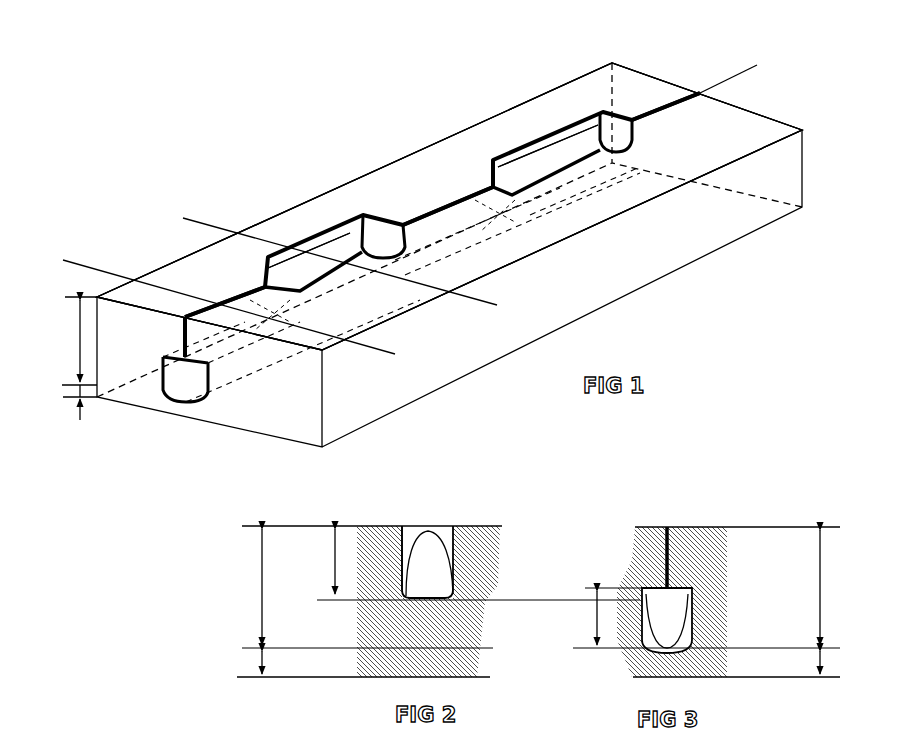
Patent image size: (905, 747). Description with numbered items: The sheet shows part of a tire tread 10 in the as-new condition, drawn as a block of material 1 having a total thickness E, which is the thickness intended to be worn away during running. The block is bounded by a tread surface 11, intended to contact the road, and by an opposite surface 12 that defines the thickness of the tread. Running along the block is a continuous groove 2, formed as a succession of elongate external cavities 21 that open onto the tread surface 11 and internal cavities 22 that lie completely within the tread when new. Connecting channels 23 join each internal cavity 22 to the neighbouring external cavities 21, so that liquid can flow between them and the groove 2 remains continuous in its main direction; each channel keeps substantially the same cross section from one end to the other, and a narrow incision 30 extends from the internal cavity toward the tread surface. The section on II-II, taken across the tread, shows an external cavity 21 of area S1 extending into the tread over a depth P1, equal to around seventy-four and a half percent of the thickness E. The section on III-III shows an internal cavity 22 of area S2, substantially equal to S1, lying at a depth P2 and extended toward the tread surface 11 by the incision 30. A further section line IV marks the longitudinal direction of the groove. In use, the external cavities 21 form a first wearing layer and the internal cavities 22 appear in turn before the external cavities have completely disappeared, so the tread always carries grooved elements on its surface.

In FIG. 2, the body / block material 1 is at (477, 565).
In FIG. 3, the body / block material 1 is at (672, 602).
In FIG. 1, the continuous groove 2 is at (557, 158).
In FIG. 1, the tread 10 is at (374, 134).
In FIG. 1, the tread surface 11 is at (382, 184).
In FIG. 2, the tread surface 11 is at (499, 522).
In FIG. 3, the tread surface 11 is at (593, 487).
In FIG. 1, the surface defining the thickness of the tread 12 is at (187, 421).
In FIG. 2, the surface defining the thickness of the tread 12 is at (377, 681).
In FIG. 3, the surface defining the thickness of the tread 12 is at (713, 682).
In FIG. 1, the external cavity 21 is at (523, 158).
In FIG. 2, the external cavity 21 is at (401, 528).
In FIG. 1, the internal cavity 22 is at (177, 385).
In FIG. 3, the internal cavity 22 is at (700, 648).
In FIG. 1, the connecting channel 23 is at (485, 187).
In FIG. 2, the connecting channel 23 is at (430, 528).
In FIG. 1, the narrow slit 30 is at (440, 207).
In FIG. 3, the narrow slit 30 is at (672, 535).
In FIG. 2, the cross-sectional area of external cavity S1 is at (455, 526).
In FIG. 3, the cross-sectional area of internal cavity S2 is at (668, 623).
In FIG. 2, the depth of external cavity P1 is at (466, 564).
In FIG. 3, the depth of tunnel 22 P2 is at (623, 616).
In FIG. 1, the total thickness of tread E is at (78, 341).
In FIG. 2, the total thickness of tread E is at (365, 588).
In FIG. 3, the total thickness of tread E is at (708, 589).
In FIG. 1, the section line II- II is at (297, 173).
In FIG. 1, the section line III- III is at (94, 266).
In FIG. 1, the section line IV- IV is at (726, 71).